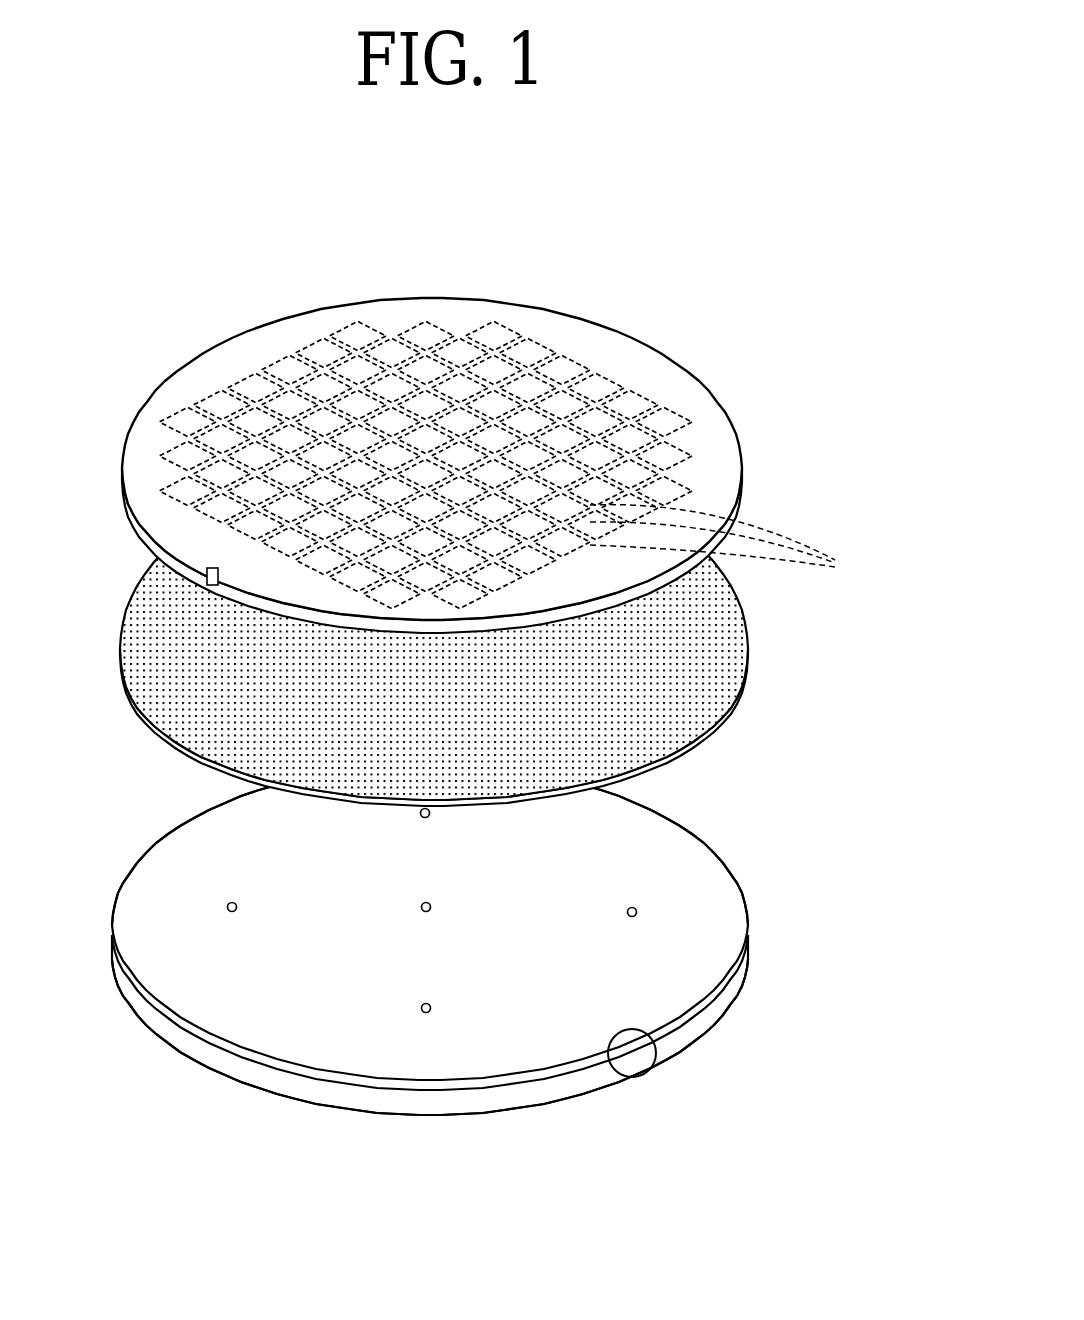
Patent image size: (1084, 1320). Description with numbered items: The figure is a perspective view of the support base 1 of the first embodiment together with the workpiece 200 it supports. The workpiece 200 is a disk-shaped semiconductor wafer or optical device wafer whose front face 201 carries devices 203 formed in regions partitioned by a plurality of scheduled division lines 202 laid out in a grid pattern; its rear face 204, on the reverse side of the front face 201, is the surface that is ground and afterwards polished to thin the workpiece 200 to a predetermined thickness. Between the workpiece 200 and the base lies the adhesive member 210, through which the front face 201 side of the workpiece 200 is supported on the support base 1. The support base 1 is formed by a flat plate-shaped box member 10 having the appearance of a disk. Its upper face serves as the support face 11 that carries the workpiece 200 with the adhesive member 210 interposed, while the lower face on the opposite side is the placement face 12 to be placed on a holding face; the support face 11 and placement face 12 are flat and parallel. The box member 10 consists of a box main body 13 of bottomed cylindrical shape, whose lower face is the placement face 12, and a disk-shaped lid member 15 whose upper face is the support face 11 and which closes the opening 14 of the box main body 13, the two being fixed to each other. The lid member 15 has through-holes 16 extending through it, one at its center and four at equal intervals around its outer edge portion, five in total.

The support base 1 is at (495, 989).
The box member 10 is at (495, 1025).
The support face 11 is at (633, 878).
The placement face 12 is at (684, 1060).
The box main body 13 is at (265, 1087).
The opening 14 is at (630, 1077).
The lid member 15 is at (715, 840).
The through-hole 16 is at (636, 908).
The workpiece 200 is at (508, 430).
The front face 201 is at (655, 612).
The scheduled division lines 202 is at (640, 397).
The devices 203 is at (495, 373).
The rear face 204 is at (707, 492).
The adhesive member 210 is at (707, 647).